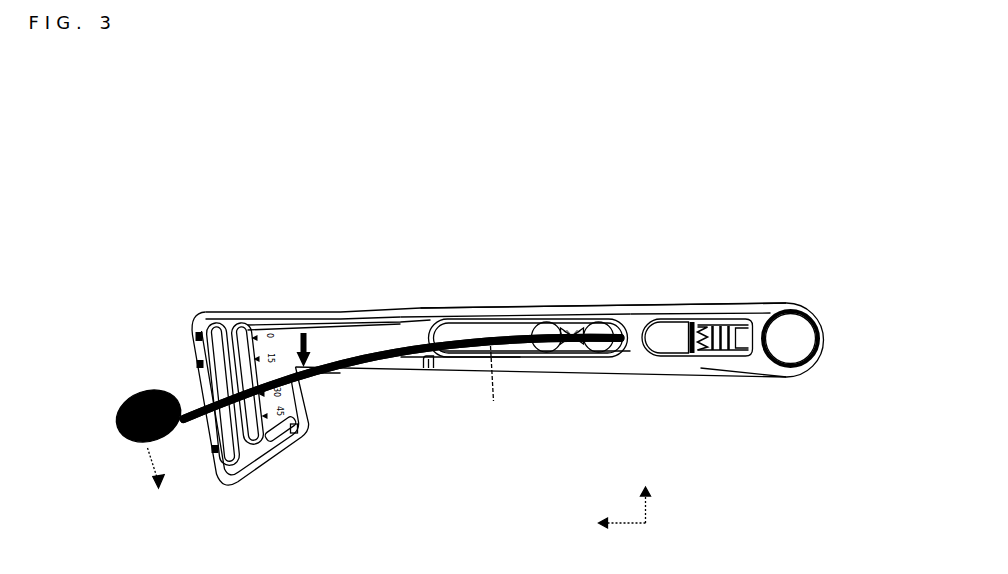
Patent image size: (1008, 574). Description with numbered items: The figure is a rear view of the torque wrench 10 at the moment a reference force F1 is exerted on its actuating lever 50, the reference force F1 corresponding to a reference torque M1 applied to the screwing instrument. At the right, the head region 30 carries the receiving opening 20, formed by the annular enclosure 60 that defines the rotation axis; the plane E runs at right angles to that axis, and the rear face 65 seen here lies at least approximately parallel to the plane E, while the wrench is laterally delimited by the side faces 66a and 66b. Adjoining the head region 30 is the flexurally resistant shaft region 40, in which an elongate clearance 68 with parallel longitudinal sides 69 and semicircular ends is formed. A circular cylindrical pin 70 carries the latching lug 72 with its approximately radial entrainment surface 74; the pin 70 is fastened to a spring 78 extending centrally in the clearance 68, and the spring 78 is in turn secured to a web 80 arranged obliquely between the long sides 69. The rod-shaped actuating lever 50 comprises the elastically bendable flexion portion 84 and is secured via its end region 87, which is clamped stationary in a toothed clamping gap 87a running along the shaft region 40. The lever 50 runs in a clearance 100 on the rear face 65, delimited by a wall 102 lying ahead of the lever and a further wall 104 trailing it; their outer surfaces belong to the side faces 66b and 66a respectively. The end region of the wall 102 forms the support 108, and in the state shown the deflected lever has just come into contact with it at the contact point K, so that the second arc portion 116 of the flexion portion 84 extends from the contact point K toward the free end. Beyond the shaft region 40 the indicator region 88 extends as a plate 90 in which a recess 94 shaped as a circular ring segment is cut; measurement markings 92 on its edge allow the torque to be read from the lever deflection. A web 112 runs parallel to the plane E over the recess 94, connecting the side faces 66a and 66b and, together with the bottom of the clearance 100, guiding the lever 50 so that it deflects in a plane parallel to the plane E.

The torque wrench 10 is at (467, 252).
The receiving opening 20 is at (802, 306).
The head region 30 is at (782, 288).
The shaft region 40 is at (550, 277).
The actuating lever 50 is at (390, 343).
The annular enclosure 60 is at (812, 318).
The rear face 65 is at (636, 316).
The side face 66a is at (520, 318).
The side face 66b is at (542, 366).
The elongate clearance 68 is at (672, 342).
The longitudinal sides 69 is at (668, 317).
The pin 70 is at (738, 356).
The latching lug 72 is at (777, 363).
The entrainment surface 74 is at (787, 372).
The spring 78 is at (715, 352).
The web 80 is at (705, 318).
The flexion portion 84 is at (390, 343).
The end region 87 is at (604, 348).
The toothed clamping gap 87a is at (575, 345).
The indicator region 88 is at (262, 312).
The plate 90 is at (307, 415).
The measurement markings 92 is at (244, 327).
The recess 94 is at (230, 440).
The clearance 100 is at (340, 343).
The wall 102 is at (500, 350).
The further wall 104 is at (443, 316).
The support 108 is at (432, 358).
The web 112 is at (258, 442).
The second arc portion 116 is at (338, 365).
The contact point K is at (428, 356).
The reference torque M1 is at (245, 380).
The reference force F1 is at (141, 477).
The plane E is at (625, 510).